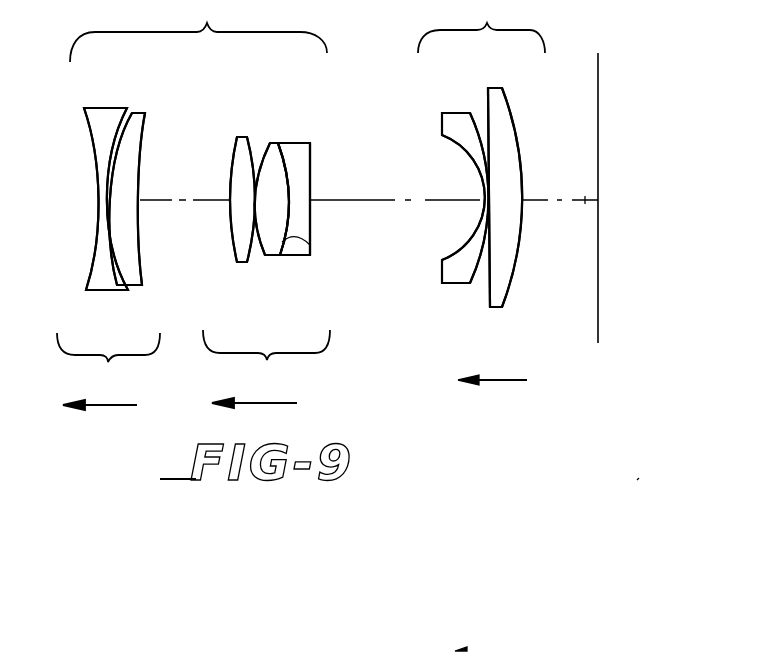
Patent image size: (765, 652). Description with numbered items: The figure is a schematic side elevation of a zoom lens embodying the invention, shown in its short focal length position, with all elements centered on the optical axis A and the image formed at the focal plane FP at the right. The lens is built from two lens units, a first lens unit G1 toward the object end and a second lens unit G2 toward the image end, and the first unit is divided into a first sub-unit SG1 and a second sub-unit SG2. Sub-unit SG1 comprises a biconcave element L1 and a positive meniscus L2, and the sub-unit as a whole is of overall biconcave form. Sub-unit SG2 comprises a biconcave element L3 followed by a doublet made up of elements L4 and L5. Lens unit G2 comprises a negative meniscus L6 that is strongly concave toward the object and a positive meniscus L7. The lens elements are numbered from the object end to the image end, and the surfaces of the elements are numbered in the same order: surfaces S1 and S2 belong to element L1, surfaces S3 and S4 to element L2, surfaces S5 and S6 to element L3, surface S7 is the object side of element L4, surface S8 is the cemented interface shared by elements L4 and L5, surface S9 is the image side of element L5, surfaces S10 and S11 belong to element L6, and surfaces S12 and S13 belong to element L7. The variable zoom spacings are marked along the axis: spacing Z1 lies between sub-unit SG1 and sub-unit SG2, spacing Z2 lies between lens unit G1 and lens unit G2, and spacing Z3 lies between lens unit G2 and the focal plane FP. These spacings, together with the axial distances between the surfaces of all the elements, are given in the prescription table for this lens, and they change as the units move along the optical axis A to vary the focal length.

The lens unit G1 is at (198, 33).
The lens unit G2 is at (481, 27).
The lens sub-unit SG1 is at (108, 371).
The lens sub-unit SG2 is at (266, 369).
The biconcave element L1 is at (98, 107).
The positive meniscus L2 is at (136, 112).
The biconcave element L3 is at (240, 136).
The lens element L4 is at (271, 142).
The lens element L5 is at (295, 142).
The negative meniscus L6 is at (450, 112).
The positive meniscus L7 is at (502, 91).
The surface S1 is at (94, 252).
The surface S2 is at (118, 258).
The surface S3 is at (113, 236).
The surface S4 is at (143, 276).
The surface S5 is at (232, 193).
The surface S6 is at (253, 263).
The surface S7 is at (266, 257).
The surface S8 is at (310, 247).
The surface S9 is at (310, 221).
The surface S10 is at (462, 246).
The surface S11 is at (478, 277).
The surface S12 is at (487, 290).
The surface S13 is at (505, 290).
The variable zoom spacing Z1 is at (185, 192).
The variable zoom spacing Z2 is at (395, 191).
The variable zoom spacing Z3 is at (560, 191).
The optical axis A is at (585, 200).
The focal plane FP is at (600, 146).